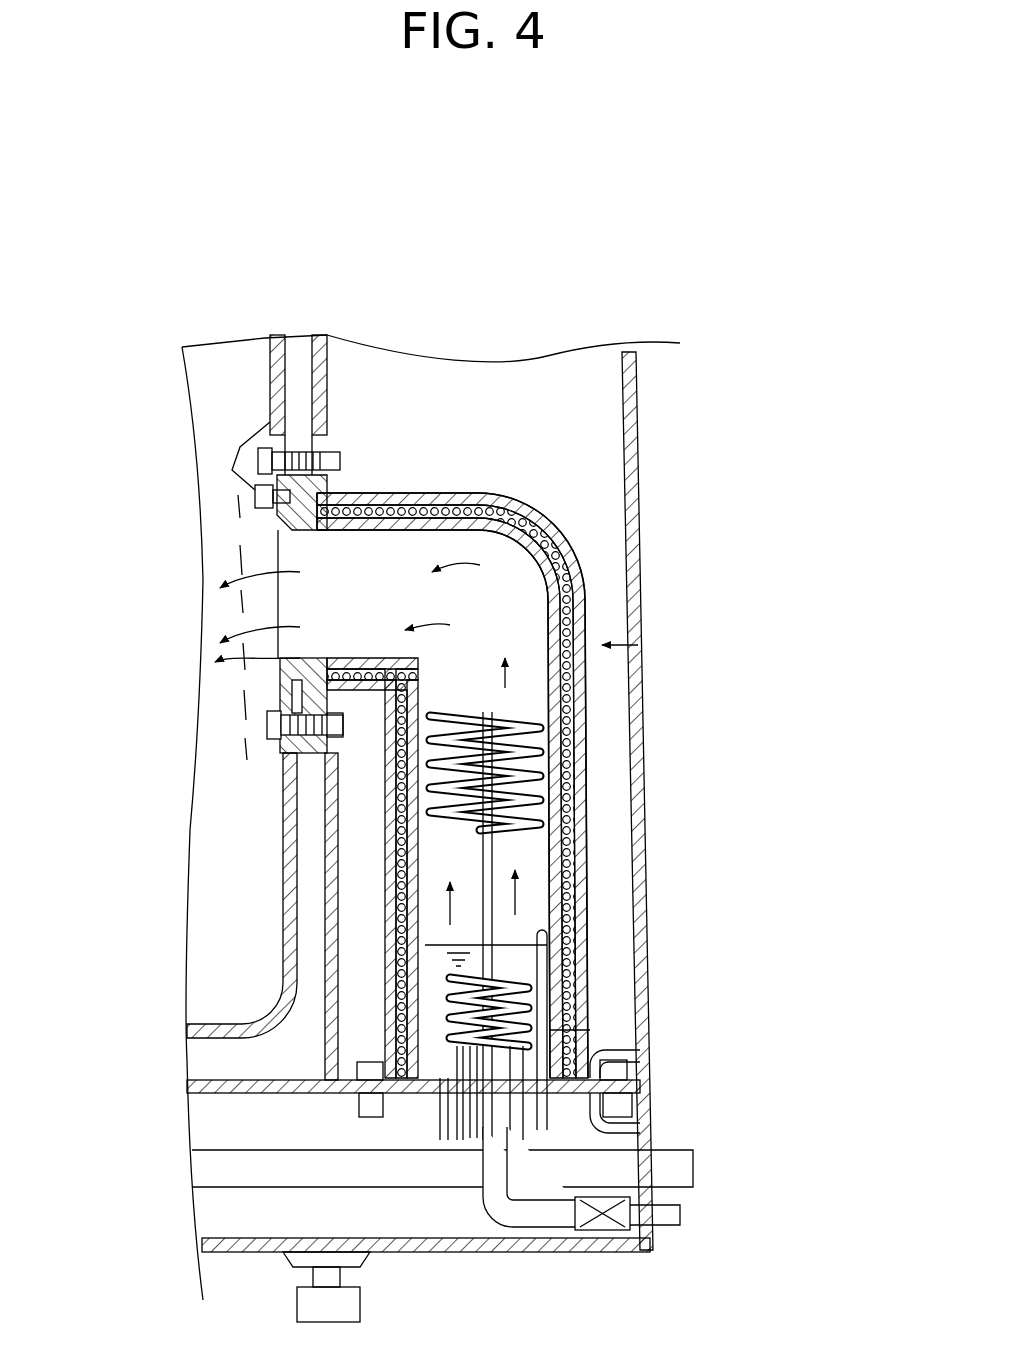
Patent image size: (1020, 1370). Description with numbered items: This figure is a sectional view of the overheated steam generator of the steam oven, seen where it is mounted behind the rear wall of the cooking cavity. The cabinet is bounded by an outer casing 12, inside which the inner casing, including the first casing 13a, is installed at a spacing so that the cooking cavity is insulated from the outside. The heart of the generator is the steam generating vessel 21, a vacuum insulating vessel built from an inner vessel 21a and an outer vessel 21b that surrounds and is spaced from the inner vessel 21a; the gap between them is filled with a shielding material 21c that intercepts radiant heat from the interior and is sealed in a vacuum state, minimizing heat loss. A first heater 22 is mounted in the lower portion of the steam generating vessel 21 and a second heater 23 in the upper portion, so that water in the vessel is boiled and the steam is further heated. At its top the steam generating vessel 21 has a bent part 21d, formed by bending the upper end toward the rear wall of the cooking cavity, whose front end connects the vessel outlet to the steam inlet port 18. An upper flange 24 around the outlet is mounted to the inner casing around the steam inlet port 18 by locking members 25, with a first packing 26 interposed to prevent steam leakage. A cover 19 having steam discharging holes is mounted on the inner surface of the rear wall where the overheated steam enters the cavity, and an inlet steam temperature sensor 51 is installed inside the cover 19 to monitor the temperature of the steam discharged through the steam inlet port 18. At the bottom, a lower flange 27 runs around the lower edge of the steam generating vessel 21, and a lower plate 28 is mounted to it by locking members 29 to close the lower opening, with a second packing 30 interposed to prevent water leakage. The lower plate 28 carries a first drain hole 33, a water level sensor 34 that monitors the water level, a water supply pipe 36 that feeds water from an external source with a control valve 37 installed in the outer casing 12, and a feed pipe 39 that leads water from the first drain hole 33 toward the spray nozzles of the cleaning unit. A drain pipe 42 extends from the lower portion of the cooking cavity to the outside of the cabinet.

The outer casing 12 is at (636, 396).
The first casing 13a is at (290, 935).
The steam inlet port 18 is at (300, 666).
The cover 19 is at (275, 752).
The steam generating vessel 21 is at (625, 640).
The inner vessel 21a is at (583, 690).
The outer vessel 21b is at (586, 745).
The shielding material 21c is at (590, 790).
The bent part 21d is at (395, 493).
The first heater 22 is at (590, 968).
The second heater 23 is at (458, 712).
The upper flange 24 is at (315, 440).
The locking members 25 is at (240, 445).
The first packing 26 is at (258, 462).
The lower flange 27 is at (640, 1082).
The lower plate 28 is at (640, 1128).
The locking members 29 is at (640, 1050).
The second packing 30 is at (590, 1030).
The first drain hole 33 is at (427, 1100).
The water level sensor 34 is at (543, 930).
The water supply pipe 36 is at (528, 1222).
The control valve 37 is at (598, 1232).
The feed pipe 39 is at (442, 1142).
The drain pipe 42 is at (258, 1175).
The inlet steam temperature sensor 51 is at (255, 497).